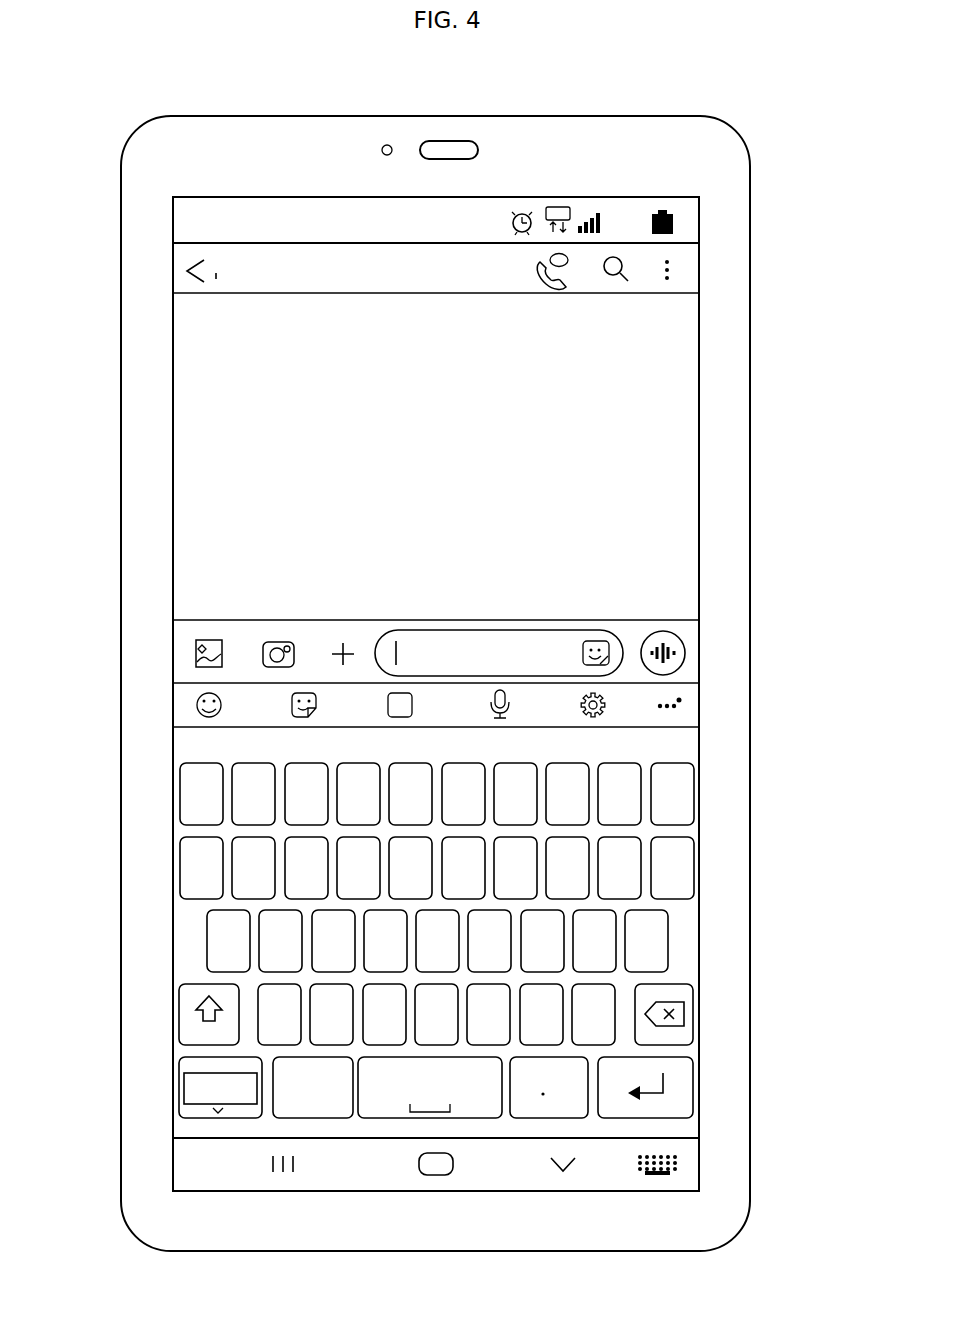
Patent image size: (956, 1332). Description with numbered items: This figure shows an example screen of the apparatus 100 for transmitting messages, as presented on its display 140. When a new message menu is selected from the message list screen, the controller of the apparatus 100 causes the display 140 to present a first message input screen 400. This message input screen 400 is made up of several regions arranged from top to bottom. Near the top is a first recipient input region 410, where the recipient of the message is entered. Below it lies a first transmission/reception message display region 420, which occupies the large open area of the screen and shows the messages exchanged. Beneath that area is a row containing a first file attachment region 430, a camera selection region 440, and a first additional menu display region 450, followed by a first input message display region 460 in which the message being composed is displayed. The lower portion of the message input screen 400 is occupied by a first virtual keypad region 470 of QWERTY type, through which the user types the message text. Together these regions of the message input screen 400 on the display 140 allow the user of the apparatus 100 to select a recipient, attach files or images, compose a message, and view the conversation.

The apparatus for transmitting messages 100 is at (747, 152).
The display 140 is at (699, 214).
The first message input screen 400 is at (686, 480).
The first recipient input region 410 is at (178, 270).
The first transmission/reception message display region 420 is at (205, 426).
The first file attachment region 430 is at (200, 638).
The camera icon 440 is at (272, 640).
The first additional menu display region 450 is at (342, 642).
The first input message display region 460 is at (456, 640).
The first virtual keypad region 470 is at (184, 933).